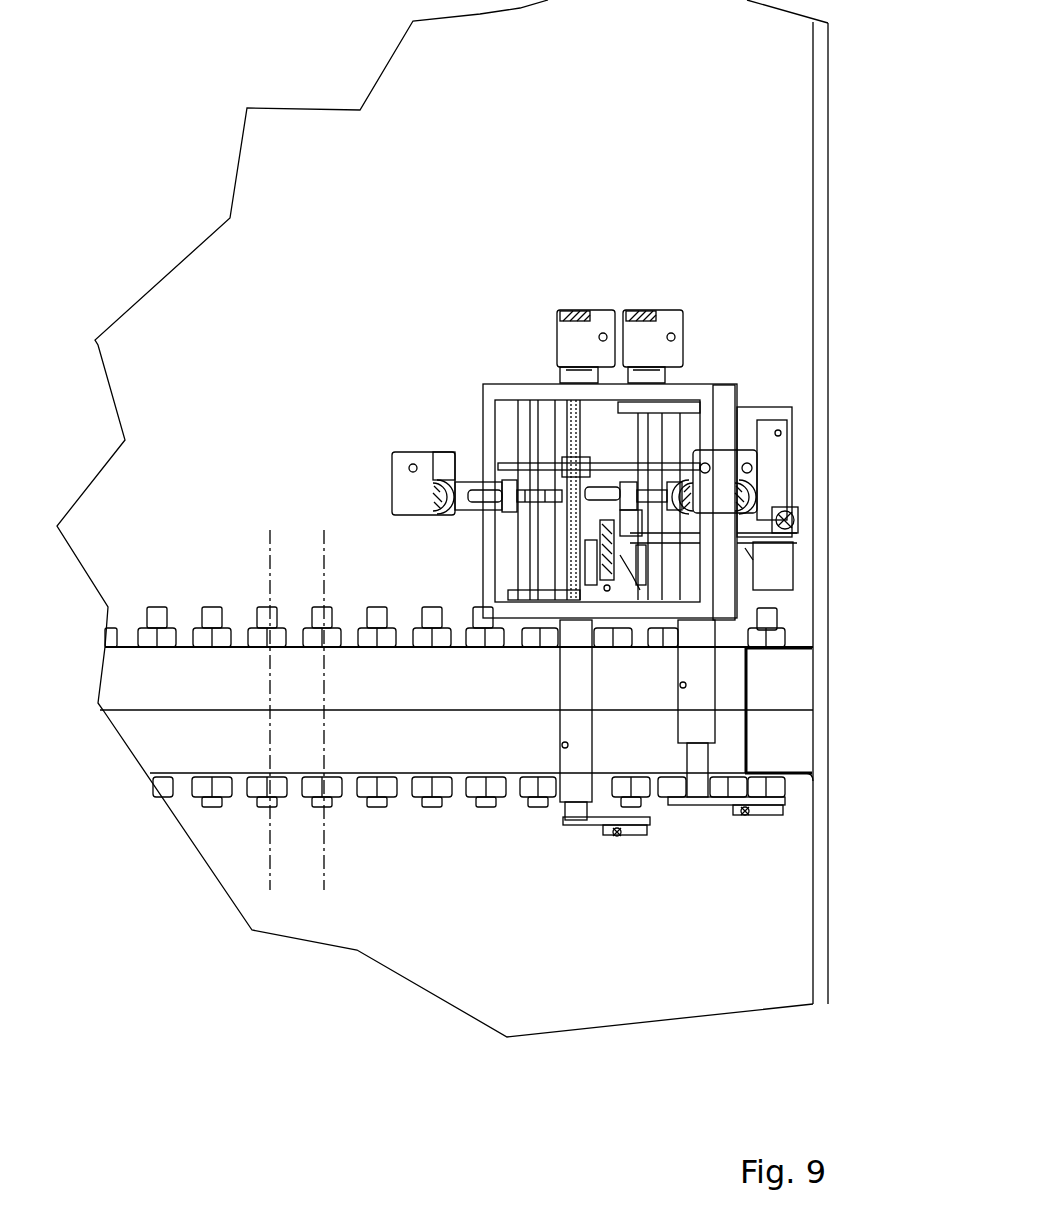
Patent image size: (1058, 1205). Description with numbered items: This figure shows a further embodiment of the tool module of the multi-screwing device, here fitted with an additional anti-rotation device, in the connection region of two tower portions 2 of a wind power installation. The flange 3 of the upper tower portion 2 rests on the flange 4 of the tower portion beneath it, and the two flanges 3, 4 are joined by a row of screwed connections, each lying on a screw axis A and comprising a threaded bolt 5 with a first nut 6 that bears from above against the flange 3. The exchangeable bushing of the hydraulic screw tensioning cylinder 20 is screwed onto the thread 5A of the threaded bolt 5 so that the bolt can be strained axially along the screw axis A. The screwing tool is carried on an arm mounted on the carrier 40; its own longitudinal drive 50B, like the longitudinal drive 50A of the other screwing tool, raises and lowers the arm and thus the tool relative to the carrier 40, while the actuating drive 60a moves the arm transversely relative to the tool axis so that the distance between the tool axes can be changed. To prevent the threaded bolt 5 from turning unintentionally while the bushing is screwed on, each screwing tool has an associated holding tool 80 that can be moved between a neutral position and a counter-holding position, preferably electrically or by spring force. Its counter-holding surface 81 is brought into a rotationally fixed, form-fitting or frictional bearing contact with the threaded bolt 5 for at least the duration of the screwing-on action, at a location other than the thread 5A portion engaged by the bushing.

The tower portion 2 is at (820, 130).
The flange 3 is at (793, 678).
The flange 4 is at (795, 743).
The threaded bolt 5 is at (305, 620).
The thread 5A is at (772, 618).
The first nut 6 is at (250, 637).
The screw tensioning cylinder 20 is at (800, 550).
The carrier 40 is at (487, 405).
The longitudinal drive 50A is at (572, 347).
The longitudinal drive 50B is at (650, 405).
The actuating drive 60a is at (730, 466).
The holding tool 80 is at (550, 826).
The counter-holding surface 81 is at (612, 831).
The screw axis A is at (323, 862).